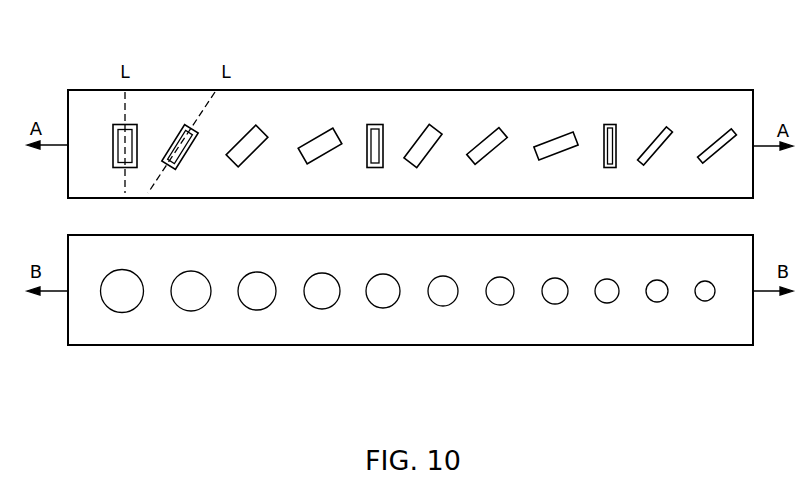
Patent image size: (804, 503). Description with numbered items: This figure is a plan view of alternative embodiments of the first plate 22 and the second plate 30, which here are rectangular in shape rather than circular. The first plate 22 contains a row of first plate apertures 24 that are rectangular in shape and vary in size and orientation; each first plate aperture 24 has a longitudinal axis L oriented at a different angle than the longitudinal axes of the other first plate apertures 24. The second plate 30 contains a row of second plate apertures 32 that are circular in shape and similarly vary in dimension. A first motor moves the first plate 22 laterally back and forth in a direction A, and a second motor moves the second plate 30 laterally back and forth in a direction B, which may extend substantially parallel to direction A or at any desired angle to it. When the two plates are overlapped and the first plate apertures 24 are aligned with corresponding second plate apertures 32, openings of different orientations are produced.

The first plate 22 is at (638, 110).
The first plate apertures 24 is at (187, 127).
The second plate 30 is at (286, 326).
The second plate apertures 32 is at (133, 305).